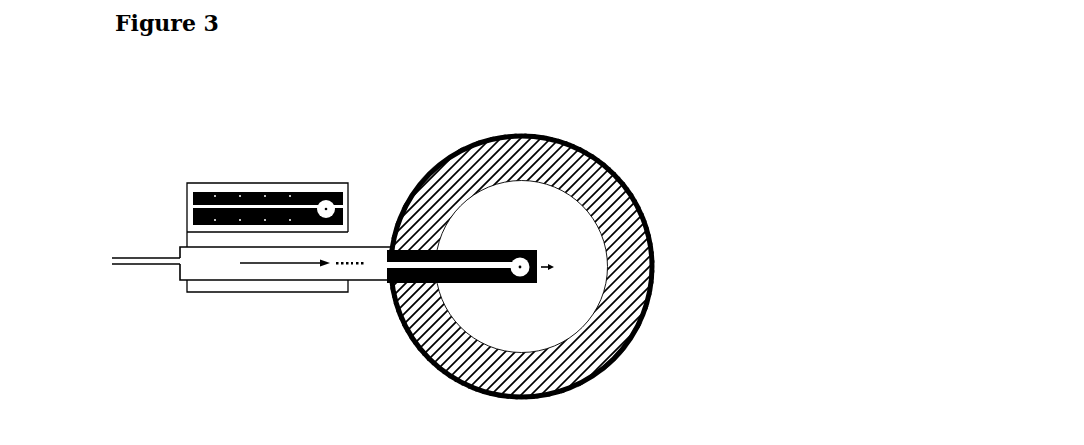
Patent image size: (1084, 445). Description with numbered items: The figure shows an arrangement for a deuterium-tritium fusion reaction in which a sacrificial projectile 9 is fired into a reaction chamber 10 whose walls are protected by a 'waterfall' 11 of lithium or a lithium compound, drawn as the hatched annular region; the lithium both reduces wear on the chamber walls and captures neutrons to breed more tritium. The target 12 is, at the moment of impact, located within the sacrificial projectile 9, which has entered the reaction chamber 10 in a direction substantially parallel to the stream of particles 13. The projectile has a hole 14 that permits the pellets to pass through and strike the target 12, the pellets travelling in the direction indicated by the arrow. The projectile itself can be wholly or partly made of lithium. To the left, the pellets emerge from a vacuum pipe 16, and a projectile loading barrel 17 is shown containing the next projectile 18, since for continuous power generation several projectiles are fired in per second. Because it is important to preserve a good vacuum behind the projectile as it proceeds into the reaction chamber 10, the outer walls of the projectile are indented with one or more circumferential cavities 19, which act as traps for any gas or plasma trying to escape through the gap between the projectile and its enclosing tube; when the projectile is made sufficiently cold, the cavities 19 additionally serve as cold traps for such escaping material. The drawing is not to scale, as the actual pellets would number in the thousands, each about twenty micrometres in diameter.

The sacrificial projectile 9 is at (442, 290).
The reaction chamber 10 is at (657, 215).
The waterfall 11 is at (623, 322).
The target 12 is at (523, 258).
The particles 13 is at (355, 272).
The hole 14 is at (463, 252).
The vacuum pipe 16 is at (125, 272).
The projectile loading barrel 17 is at (253, 172).
The next projectile 18 is at (192, 195).
The circumferential cavities 19 is at (485, 285).